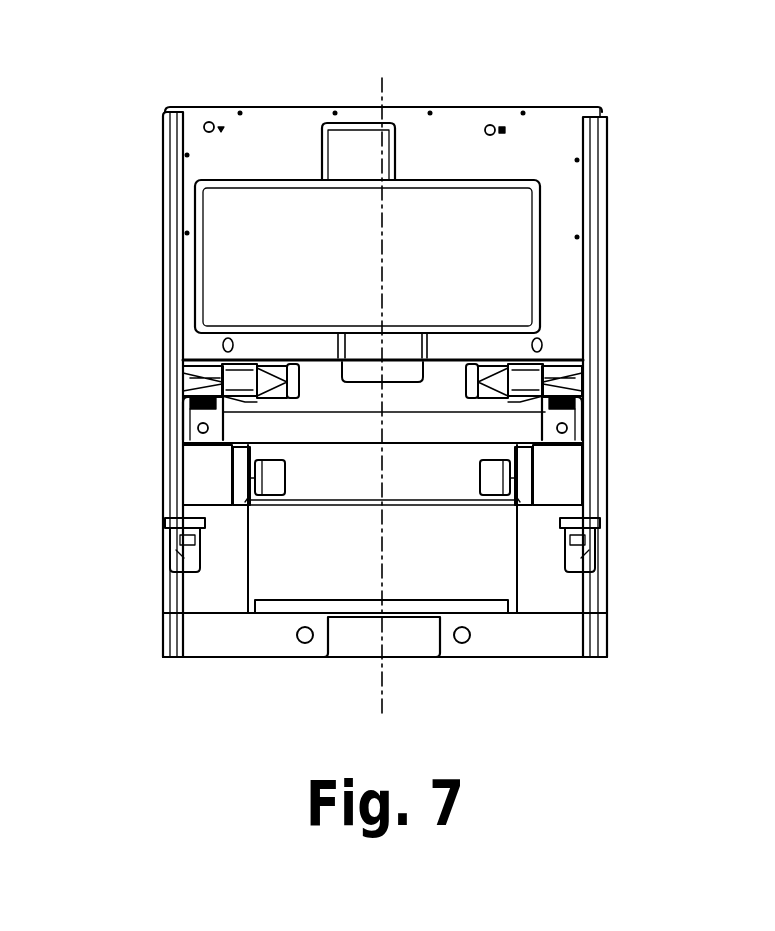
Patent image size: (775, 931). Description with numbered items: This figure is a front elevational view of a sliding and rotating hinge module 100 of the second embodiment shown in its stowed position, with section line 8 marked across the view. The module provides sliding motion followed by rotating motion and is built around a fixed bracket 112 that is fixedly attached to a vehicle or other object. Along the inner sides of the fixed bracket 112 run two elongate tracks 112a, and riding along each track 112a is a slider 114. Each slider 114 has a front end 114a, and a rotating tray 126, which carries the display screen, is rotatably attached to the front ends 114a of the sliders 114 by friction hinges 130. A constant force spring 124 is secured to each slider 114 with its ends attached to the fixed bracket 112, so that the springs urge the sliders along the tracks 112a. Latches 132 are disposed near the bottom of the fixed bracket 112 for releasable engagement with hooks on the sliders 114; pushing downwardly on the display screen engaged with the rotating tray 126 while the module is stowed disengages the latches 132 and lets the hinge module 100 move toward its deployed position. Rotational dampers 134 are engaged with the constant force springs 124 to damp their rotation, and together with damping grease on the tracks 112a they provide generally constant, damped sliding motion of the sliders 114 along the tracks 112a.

The section line 8- 8 is at (357, 53).
The sliding and rotating hinge module 100 is at (601, 76).
The fixed bracket 112 is at (222, 603).
The elongate tracks 112a is at (178, 265).
The slider 114 is at (200, 413).
The front end 114a is at (200, 360).
The constant force spring 124 is at (205, 477).
The rotating tray 126 is at (470, 107).
The friction hinges 130 is at (210, 392).
The latches 132 is at (178, 546).
The rotational dampers 134 is at (238, 482).